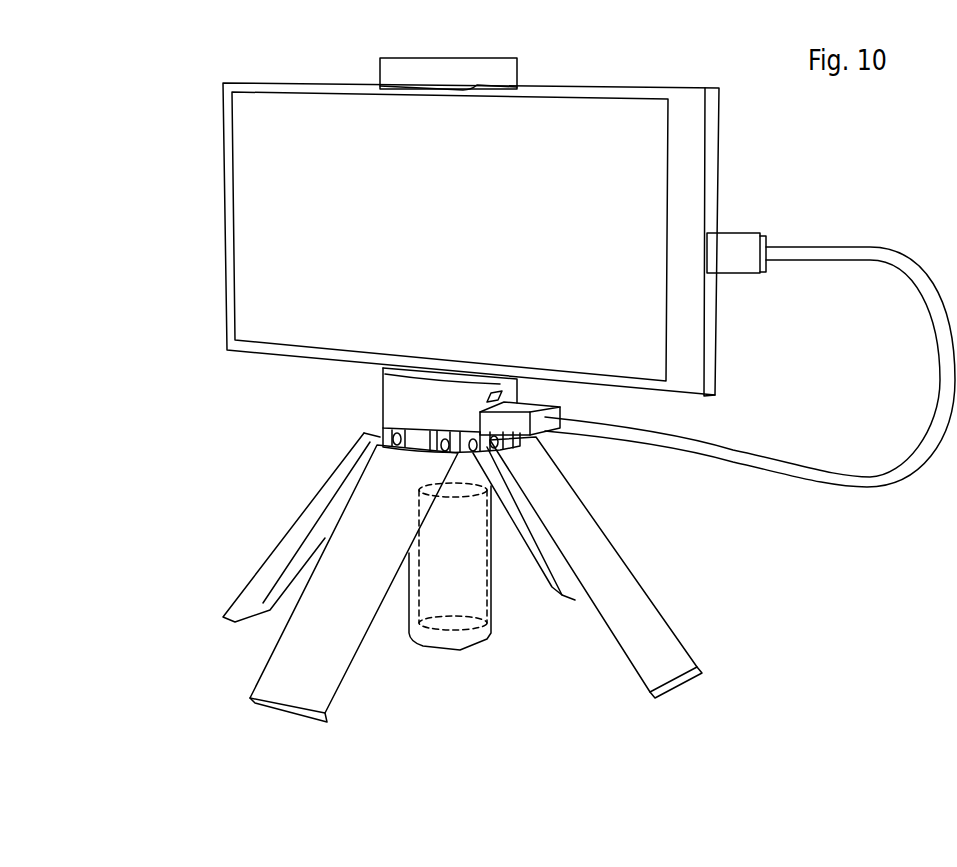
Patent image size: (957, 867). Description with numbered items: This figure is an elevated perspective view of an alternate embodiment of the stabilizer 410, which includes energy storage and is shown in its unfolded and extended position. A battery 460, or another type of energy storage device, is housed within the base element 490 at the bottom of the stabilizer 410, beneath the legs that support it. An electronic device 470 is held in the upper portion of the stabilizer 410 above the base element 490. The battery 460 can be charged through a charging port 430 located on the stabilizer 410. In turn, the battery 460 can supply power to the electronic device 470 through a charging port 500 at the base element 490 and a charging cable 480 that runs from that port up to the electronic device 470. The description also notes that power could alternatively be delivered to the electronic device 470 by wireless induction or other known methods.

The stabilizer 410 is at (178, 357).
The charging port 430 is at (487, 395).
The battery 460 is at (460, 592).
The electronic device 470 is at (633, 202).
The charging cable 480 is at (790, 465).
The base element 490 is at (415, 412).
The charging port 500 is at (490, 420).